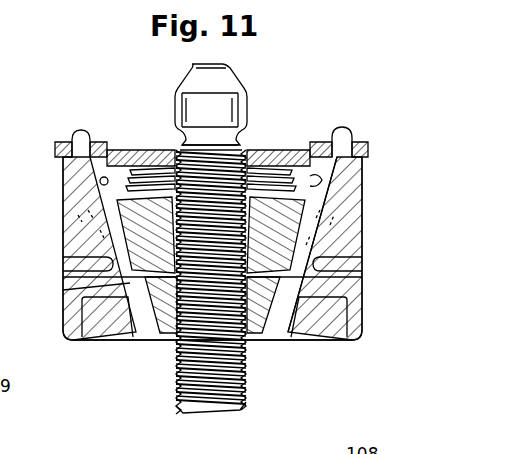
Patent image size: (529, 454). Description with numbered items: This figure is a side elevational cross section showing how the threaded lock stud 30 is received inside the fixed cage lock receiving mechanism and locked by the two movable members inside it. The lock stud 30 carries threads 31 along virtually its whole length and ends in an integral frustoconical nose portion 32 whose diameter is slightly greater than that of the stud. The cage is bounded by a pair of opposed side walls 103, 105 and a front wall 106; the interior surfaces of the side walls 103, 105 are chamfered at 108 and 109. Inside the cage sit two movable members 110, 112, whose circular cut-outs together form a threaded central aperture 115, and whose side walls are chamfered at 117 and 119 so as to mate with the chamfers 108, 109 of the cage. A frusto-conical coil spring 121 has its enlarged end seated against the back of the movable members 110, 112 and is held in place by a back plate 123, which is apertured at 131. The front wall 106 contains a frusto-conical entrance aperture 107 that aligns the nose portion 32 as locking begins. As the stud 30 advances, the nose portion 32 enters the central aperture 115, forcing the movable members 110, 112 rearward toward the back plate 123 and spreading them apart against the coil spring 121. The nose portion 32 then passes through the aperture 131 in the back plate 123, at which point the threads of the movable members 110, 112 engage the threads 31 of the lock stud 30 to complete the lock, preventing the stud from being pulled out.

The lock stud 30 is at (262, 391).
The threads 31 is at (180, 397).
The nose portion 32 is at (245, 96).
The side wall 103 is at (66, 231).
The side wall 105 is at (345, 207).
The front wall 106 is at (300, 340).
The frusto-conical entrance aperture 107 is at (165, 337).
The chamfer 108 is at (101, 182).
The chamfer 109 is at (325, 182).
The movable member 110 is at (157, 246).
The movable member 112 is at (282, 246).
The central aperture 115 is at (100, 268).
The chamfer 117 is at (110, 286).
The chamfer 119 is at (342, 238).
The frusto-conical coil spring 121 is at (260, 150).
The back plate 123 is at (137, 150).
The aperture 131 is at (165, 150).